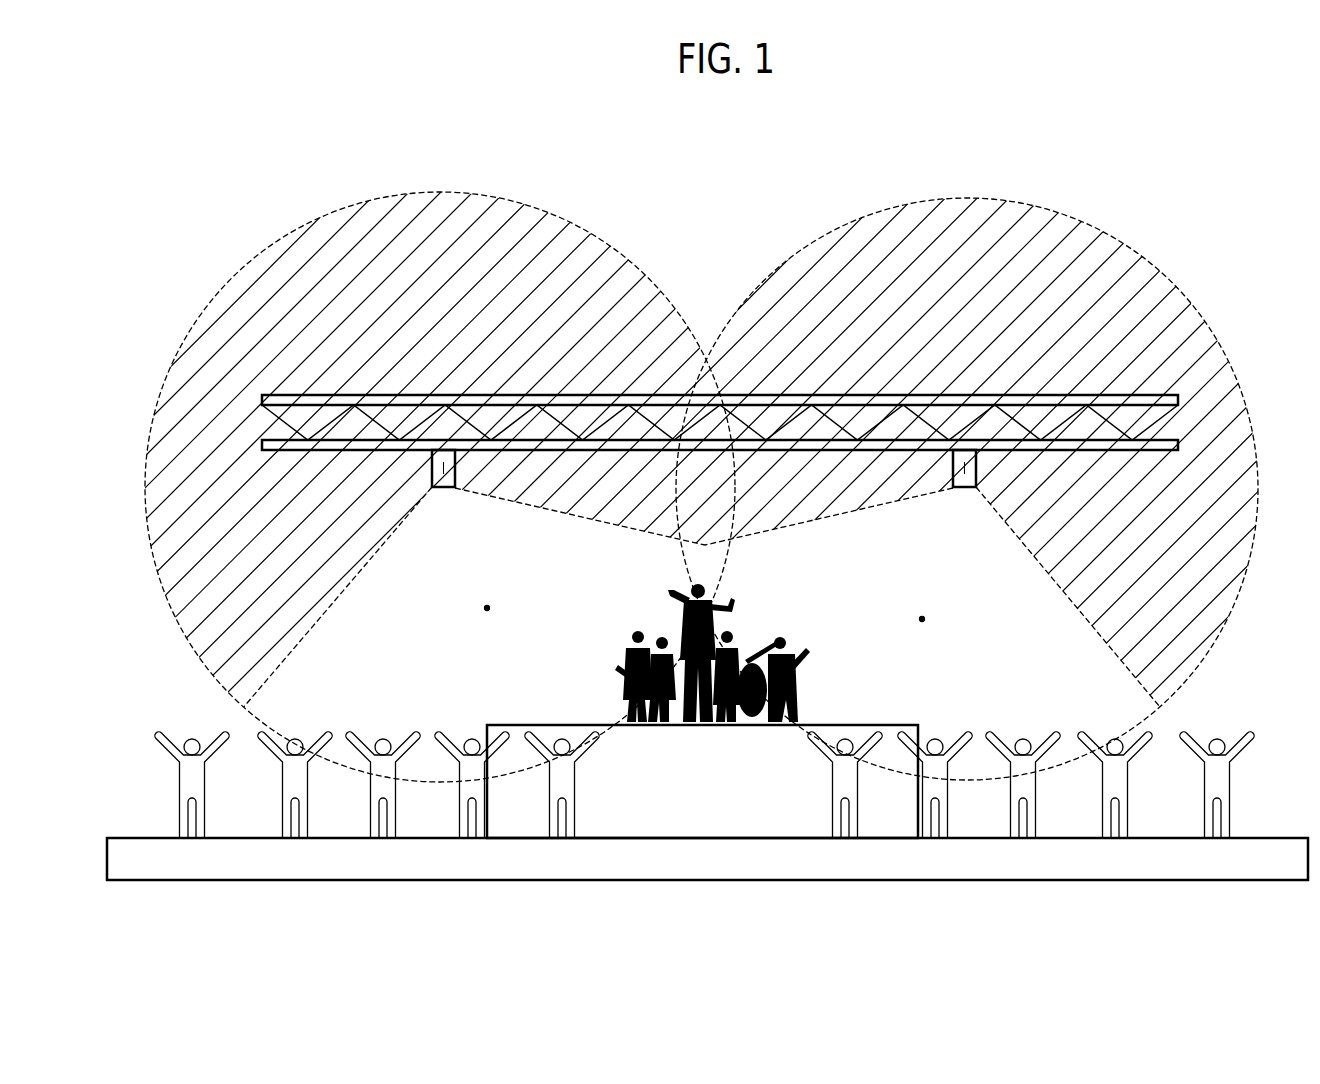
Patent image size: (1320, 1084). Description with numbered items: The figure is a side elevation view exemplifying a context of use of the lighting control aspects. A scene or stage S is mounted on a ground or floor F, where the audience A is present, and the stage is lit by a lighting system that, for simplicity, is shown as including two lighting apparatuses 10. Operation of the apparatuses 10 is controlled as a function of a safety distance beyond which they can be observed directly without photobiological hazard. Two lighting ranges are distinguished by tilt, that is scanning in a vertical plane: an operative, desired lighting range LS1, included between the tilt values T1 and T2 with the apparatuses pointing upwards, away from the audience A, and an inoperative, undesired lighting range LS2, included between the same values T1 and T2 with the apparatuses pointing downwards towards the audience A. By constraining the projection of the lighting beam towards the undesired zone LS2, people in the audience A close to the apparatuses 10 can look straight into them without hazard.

The lighting apparatus 10 is at (443, 487).
The operative range LS1 is at (765, 261).
The inoperative range LS2 is at (705, 599).
The tilt value T1 is at (312, 627).
The tilt value T2 is at (552, 512).
The audience A is at (151, 761).
The stage S is at (637, 808).
The floor F is at (708, 860).